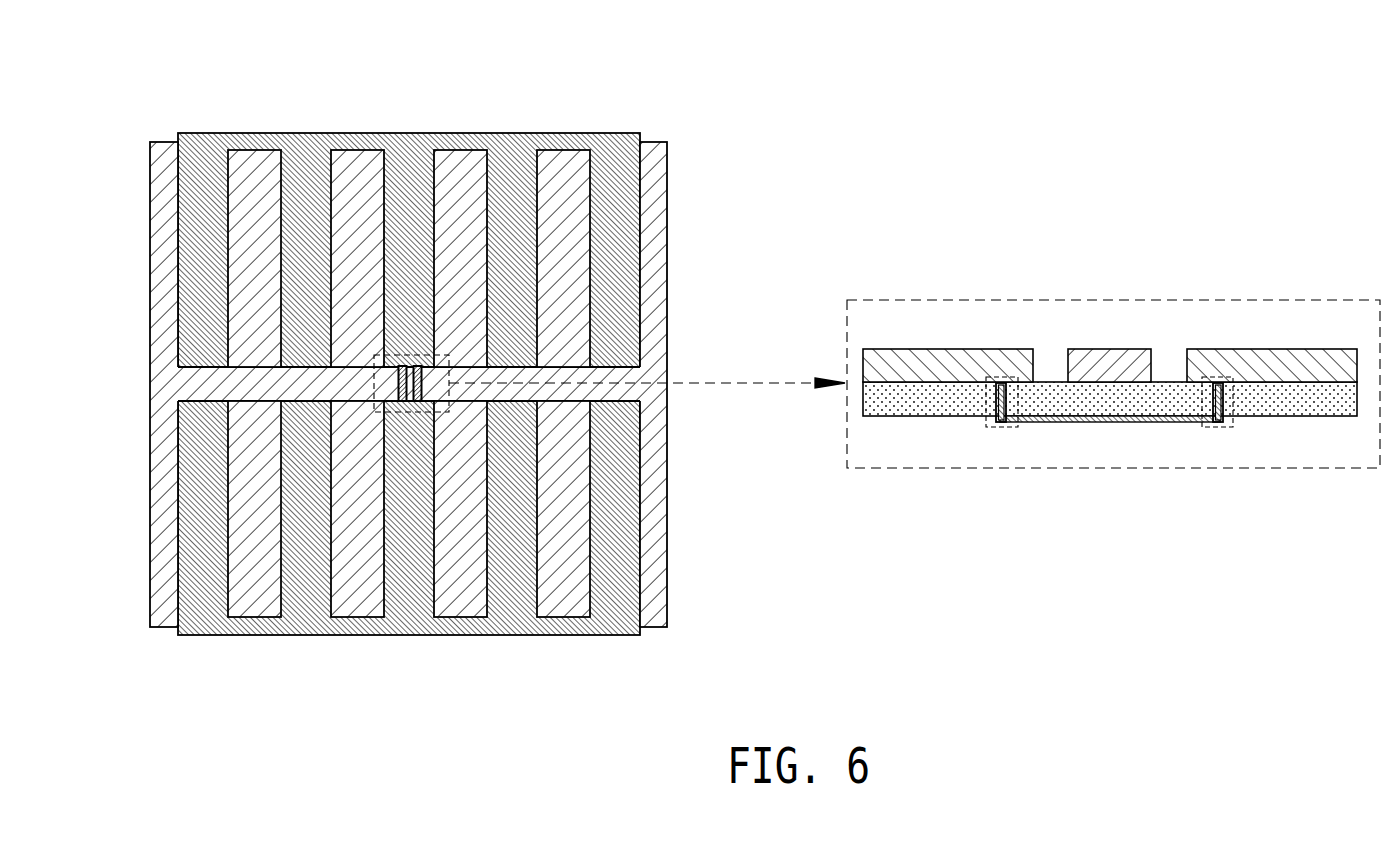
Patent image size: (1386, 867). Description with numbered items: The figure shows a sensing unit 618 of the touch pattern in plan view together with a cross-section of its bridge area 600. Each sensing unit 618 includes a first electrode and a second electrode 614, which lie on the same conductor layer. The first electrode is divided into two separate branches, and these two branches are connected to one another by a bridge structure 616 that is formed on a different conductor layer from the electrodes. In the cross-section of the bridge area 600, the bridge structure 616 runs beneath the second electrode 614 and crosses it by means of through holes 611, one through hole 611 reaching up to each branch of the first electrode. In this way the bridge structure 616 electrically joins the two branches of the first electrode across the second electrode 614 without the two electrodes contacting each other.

The sensing unit 618 is at (617, 84).
The bridge area 600 is at (1114, 375).
The second electrode 614 is at (1112, 362).
The bridge structure 616 is at (1110, 423).
The through hole 611 is at (1002, 427).